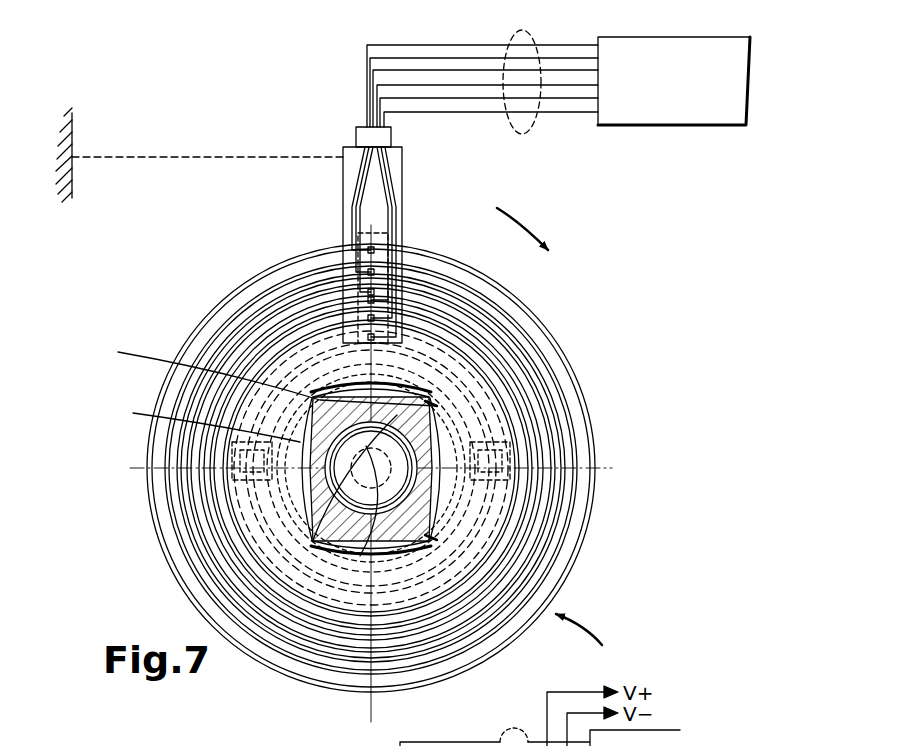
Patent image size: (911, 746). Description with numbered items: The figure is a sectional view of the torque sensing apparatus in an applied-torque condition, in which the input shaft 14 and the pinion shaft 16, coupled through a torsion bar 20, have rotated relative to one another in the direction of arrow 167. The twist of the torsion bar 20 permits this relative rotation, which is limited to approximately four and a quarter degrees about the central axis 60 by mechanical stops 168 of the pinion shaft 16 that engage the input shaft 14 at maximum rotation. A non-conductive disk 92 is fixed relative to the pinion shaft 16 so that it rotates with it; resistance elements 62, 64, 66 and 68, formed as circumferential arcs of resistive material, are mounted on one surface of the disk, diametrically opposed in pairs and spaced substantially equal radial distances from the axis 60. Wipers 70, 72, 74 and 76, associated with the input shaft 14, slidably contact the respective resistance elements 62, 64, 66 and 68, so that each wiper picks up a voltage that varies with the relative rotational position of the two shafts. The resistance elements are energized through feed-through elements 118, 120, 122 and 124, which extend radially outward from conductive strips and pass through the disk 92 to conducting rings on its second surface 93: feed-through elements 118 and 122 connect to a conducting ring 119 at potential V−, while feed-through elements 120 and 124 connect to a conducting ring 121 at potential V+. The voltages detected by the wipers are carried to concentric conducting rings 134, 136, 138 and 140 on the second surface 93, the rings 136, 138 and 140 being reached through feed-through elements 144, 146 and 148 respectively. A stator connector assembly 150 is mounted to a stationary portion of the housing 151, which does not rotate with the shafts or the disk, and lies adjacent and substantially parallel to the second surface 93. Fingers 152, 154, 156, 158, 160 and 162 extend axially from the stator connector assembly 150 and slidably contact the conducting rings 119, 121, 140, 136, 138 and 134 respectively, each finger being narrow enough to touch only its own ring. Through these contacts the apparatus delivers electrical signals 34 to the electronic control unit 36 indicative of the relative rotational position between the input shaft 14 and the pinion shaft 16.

The input shaft 14 is at (198, 422).
The pinion shaft 16 is at (259, 373).
The torsion bar 20 is at (432, 668).
The electrical signals 34 is at (512, 32).
The electronic control unit 36 is at (748, 62).
The central axis 60 is at (410, 505).
The resistance element 62 is at (470, 350).
The resistance element 64 is at (258, 535).
The resistance element 66 is at (293, 684).
The resistance element 68 is at (566, 364).
The wiper 70 is at (253, 292).
The wiper 72 is at (232, 478).
The wiper 74 is at (329, 693).
The wiper 76 is at (512, 486).
The disk 92 is at (588, 643).
The second surface 93 is at (265, 659).
The feed-through element 118 is at (196, 330).
The conducting ring 119 is at (565, 405).
The feed-through element 120 is at (255, 583).
The conducting ring 121 is at (556, 430).
The feed-through element 122 is at (512, 632).
The feed-through element 124 is at (545, 340).
The conducting ring 134 is at (565, 580).
The conducting ring 136 is at (520, 505).
The conducting ring 138 is at (530, 520).
The conducting ring 140 is at (546, 455).
The feed-through element 144 is at (232, 462).
The feed-through element 146 is at (458, 660).
The feed-through element 148 is at (560, 550).
The stator connector assembly 150 is at (343, 147).
The housing 151 is at (73, 172).
The finger 152 is at (405, 228).
The finger 154 is at (406, 250).
The finger 156 is at (406, 272).
The finger 158 is at (337, 250).
The finger 160 is at (317, 262).
The finger 162 is at (290, 274).
The arrow 167 is at (525, 212).
The mechanical stops 168 is at (437, 406).